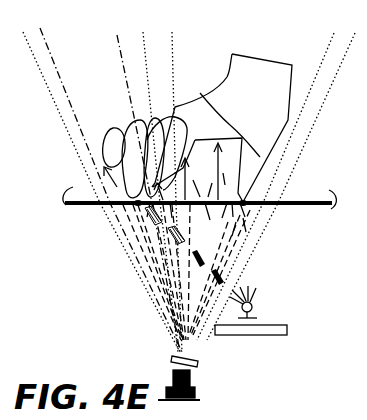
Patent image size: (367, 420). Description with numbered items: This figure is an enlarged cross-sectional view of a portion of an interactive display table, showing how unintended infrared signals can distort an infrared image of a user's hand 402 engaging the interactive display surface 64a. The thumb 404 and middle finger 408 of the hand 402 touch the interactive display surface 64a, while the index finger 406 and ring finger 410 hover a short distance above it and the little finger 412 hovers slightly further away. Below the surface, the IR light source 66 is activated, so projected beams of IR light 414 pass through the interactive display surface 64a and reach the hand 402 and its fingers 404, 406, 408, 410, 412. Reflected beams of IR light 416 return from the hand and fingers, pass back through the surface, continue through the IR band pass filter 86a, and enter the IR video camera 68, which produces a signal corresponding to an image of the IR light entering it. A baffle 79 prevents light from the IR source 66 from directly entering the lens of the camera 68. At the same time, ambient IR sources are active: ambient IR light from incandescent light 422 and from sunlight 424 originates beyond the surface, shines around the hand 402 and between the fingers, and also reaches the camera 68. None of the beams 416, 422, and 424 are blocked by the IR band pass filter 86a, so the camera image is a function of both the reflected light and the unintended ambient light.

The user's hand 402 is at (238, 84).
The thumb 404 is at (206, 139).
The index finger 406 is at (152, 115).
The middle finger 408 is at (137, 117).
The ring finger 410 is at (133, 117).
The little finger 412 is at (110, 153).
The interactive display surface 64a is at (313, 200).
The ambient IR light from incandescent light 422 is at (247, 230).
The ambient IR light from sunlight 424 is at (174, 284).
The beams of IR light 414 is at (247, 272).
The beams of reflected IR light 416 is at (175, 318).
The IR light source 66 is at (253, 309).
The baffle 79 is at (250, 334).
The IR band pass filter 86a is at (199, 364).
The IR video camera 68 is at (195, 392).